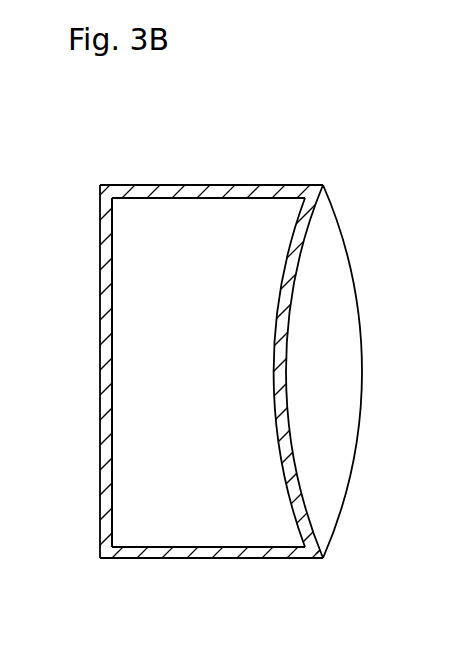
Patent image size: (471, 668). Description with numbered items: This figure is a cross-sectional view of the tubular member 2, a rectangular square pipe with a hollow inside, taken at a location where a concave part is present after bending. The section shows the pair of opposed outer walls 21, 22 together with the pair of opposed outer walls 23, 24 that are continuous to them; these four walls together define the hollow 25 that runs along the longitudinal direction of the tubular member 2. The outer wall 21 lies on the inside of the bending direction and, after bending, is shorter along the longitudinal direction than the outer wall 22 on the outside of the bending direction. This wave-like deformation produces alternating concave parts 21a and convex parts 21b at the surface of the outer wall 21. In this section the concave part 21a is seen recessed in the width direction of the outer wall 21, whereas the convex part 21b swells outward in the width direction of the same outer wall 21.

The tubular member 2 is at (311, 140).
The outer wall 21 is at (287, 276).
The concave part 21a is at (277, 358).
The convex part 21b is at (362, 356).
The outer wall 22 is at (103, 340).
The outer wall 23 is at (206, 197).
The outer wall 24 is at (240, 552).
The hollow 25 is at (146, 533).